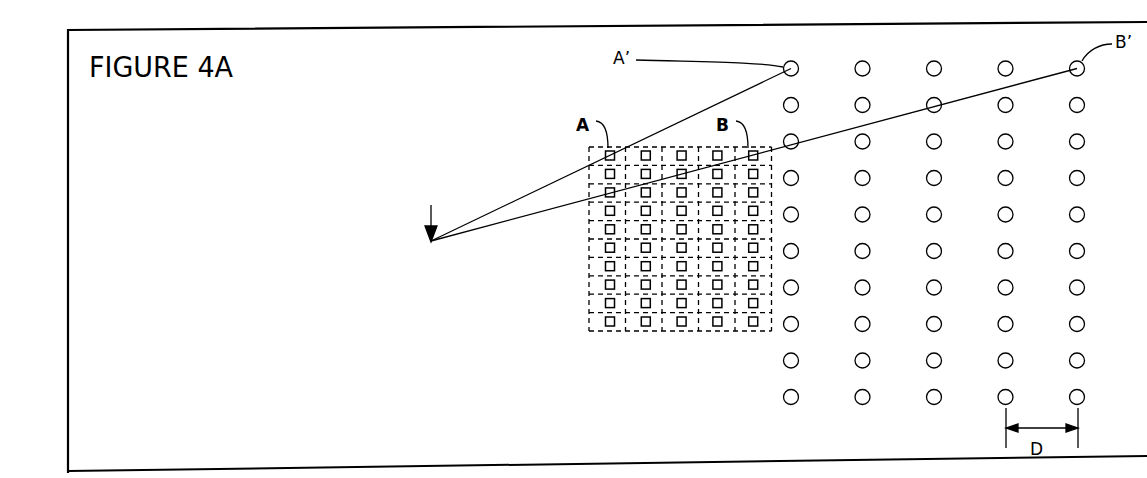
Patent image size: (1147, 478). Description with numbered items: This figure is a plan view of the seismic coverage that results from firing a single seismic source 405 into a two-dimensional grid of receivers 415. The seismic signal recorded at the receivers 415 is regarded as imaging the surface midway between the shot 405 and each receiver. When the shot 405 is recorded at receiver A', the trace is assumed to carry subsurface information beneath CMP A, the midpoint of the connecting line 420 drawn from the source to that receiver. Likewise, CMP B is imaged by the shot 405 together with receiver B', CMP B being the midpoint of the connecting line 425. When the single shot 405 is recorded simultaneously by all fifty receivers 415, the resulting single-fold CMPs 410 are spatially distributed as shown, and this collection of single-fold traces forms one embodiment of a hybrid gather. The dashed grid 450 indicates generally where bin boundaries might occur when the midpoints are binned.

The seismic source 405 is at (431, 200).
The single-fold CMPs 410 is at (752, 334).
The receivers 415 is at (1077, 60).
The connecting line 420 is at (575, 170).
The connecting line 425 is at (542, 208).
The grid 450 is at (590, 279).